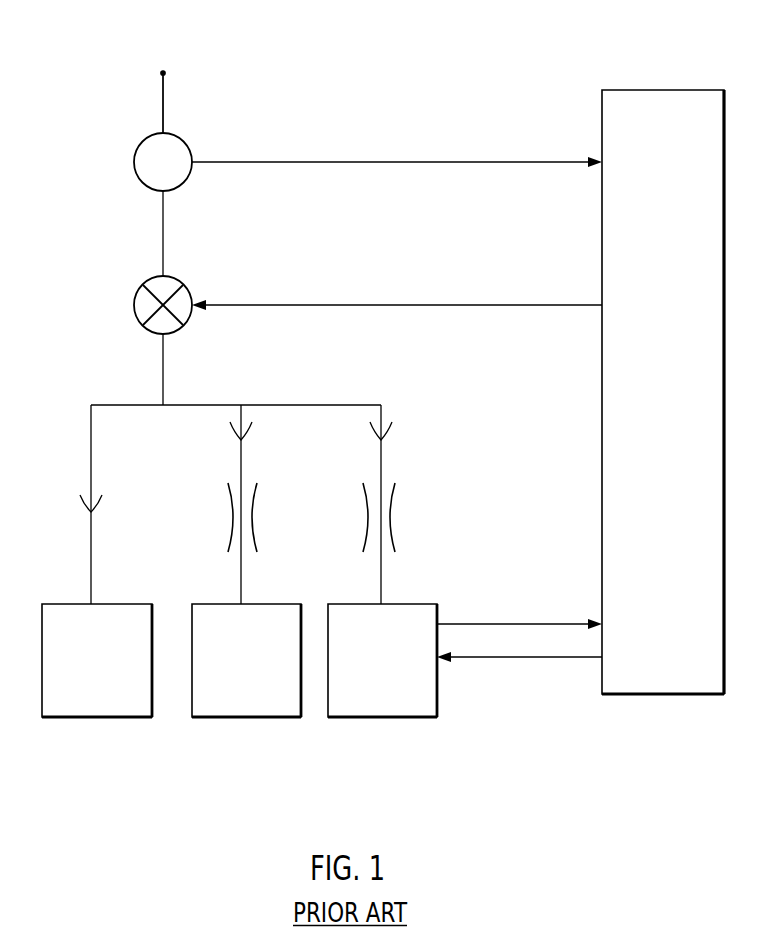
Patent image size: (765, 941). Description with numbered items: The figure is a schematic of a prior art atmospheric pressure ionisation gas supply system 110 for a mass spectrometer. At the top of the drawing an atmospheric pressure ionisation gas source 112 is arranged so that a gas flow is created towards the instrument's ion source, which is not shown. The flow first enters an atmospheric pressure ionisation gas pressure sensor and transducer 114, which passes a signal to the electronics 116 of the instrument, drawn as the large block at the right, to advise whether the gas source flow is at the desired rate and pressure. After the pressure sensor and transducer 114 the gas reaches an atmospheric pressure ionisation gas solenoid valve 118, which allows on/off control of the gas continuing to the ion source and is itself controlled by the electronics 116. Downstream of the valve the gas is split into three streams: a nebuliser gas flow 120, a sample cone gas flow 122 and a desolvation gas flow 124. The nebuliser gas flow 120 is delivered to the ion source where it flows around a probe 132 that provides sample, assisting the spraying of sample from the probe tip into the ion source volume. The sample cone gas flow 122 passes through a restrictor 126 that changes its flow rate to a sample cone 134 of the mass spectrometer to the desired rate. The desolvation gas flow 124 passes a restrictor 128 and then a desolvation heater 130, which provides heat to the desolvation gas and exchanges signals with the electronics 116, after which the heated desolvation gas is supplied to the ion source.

The atmospheric pressure ionisation gas supply system 110 is at (152, 774).
The atmospheric pressure ionisation gas source 112 is at (163, 73).
The atmospheric pressure ionisation gas pressure sensor and transducer 114 is at (150, 166).
The electronics 116 is at (661, 103).
The atmospheric pressure ionisation gas solenoid valve 118 is at (145, 315).
The nebuliser gas flow 120 is at (86, 515).
The sample cone gas flow 122 is at (247, 430).
The desolvation gas flow 124 is at (388, 430).
The restrictor 126 is at (232, 527).
The restrictor 128 is at (388, 525).
The desolvation heater 130 is at (372, 695).
The probe 132 is at (99, 691).
The sample cone 134 is at (235, 701).